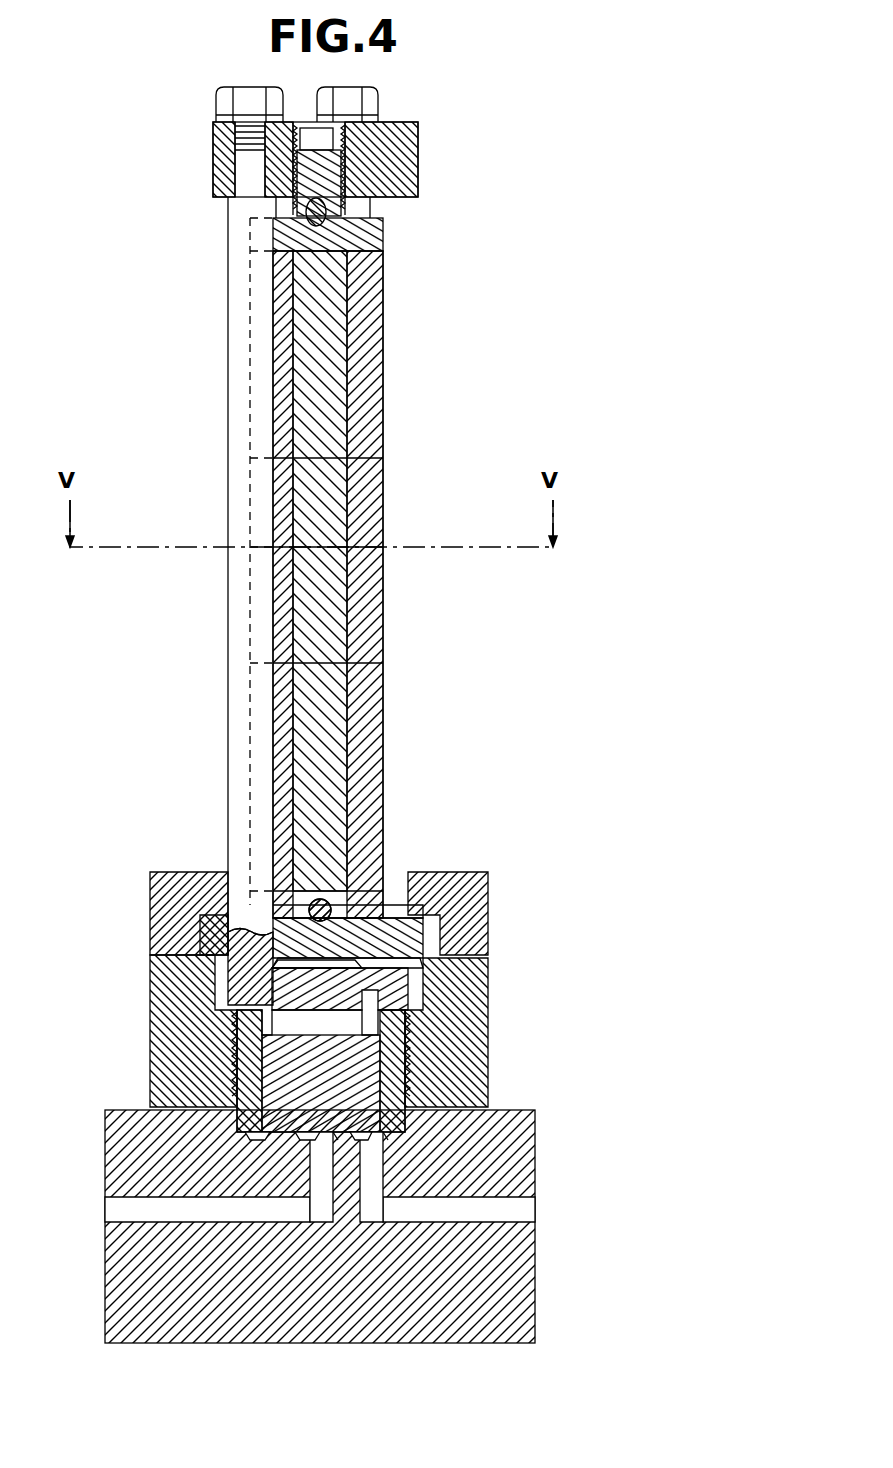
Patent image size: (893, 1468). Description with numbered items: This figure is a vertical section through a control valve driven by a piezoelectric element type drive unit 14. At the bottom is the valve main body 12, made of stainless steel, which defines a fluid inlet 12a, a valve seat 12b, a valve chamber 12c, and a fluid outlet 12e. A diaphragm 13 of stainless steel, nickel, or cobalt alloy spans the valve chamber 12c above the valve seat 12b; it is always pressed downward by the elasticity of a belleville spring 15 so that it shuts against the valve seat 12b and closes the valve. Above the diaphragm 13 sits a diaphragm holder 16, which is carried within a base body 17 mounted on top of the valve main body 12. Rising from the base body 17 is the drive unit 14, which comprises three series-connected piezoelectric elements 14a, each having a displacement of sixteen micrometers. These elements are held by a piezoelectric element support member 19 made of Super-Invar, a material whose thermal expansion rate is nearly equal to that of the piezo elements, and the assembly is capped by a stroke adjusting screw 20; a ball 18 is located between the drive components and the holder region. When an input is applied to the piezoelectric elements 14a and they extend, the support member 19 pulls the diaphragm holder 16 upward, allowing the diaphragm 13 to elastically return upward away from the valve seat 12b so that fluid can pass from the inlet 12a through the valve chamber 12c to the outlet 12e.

The valve main body 12 is at (320, 1219).
The fluid inlet 12a is at (125, 1210).
The valve seat 12b is at (322, 1150).
The valve chamber 12c is at (268, 1140).
The fluid outlet 12e is at (508, 1212).
The diaphragm 13 is at (352, 1140).
The piezoelectric element type drive unit 14 is at (396, 584).
The piezoelectric element 14a is at (333, 638).
The belleville spring 15 is at (350, 965).
The diaphragm holder 16 is at (352, 1071).
The base body 17 is at (455, 916).
The ball 18 is at (322, 900).
The piezoelectric element support member 19 is at (240, 648).
The stroke adjusting screw 20 is at (340, 168).